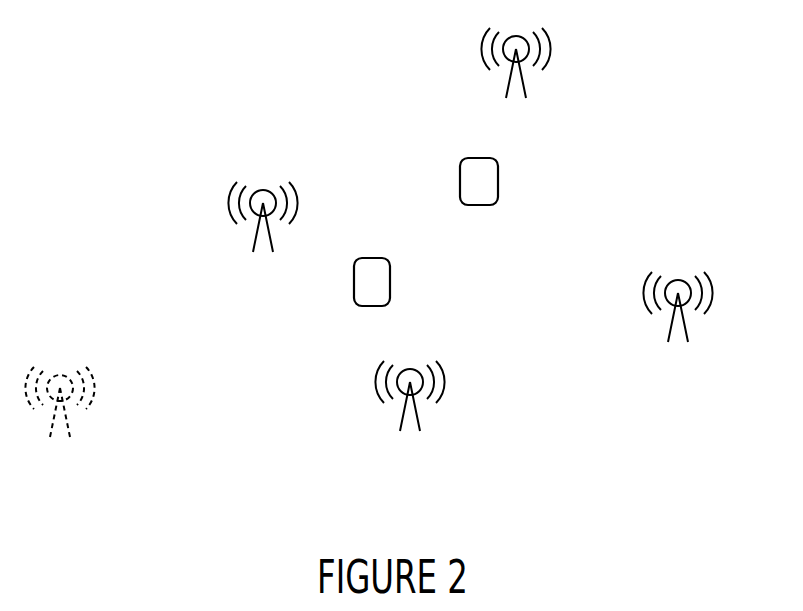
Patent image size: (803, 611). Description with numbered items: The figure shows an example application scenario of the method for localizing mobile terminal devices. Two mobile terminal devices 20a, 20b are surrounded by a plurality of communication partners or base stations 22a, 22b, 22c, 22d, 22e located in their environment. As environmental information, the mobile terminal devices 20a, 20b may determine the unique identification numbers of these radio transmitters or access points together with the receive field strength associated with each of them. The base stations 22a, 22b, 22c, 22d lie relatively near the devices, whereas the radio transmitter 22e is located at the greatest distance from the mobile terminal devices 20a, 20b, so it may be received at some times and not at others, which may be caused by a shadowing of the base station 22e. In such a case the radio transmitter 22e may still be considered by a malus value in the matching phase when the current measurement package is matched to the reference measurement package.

The mobile terminal device 20a is at (390, 280).
The mobile terminal device 20b is at (498, 180).
The base station 22a is at (423, 420).
The base station 22b is at (691, 331).
The base station 22c is at (529, 87).
The base station 22d is at (276, 241).
The radio transmitter 22e is at (74, 427).